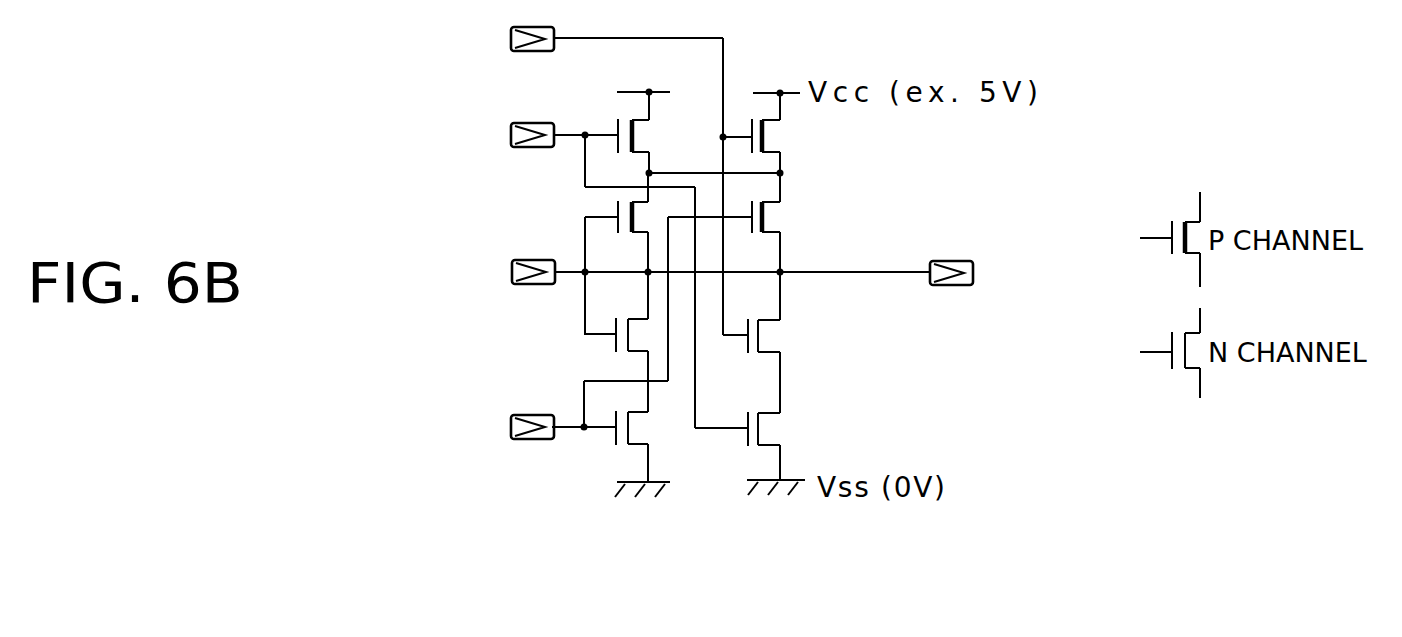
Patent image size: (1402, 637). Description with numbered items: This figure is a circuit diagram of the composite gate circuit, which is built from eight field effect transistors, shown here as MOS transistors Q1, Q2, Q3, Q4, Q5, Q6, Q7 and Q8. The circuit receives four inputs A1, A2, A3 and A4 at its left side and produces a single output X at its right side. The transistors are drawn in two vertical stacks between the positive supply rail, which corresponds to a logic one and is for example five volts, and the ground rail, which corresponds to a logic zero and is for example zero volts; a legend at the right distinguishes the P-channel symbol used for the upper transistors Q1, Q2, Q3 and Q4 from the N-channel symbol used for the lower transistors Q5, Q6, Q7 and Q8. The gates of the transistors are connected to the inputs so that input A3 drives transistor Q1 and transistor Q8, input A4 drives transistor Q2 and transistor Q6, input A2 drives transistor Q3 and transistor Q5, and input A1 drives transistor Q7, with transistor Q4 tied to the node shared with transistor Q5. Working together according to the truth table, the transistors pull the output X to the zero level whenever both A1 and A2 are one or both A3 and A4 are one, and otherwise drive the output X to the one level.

The MOS transistor Q1 is at (656, 132).
The MOS transistor Q2 is at (790, 133).
The MOS transistor Q3 is at (593, 222).
The MOS transistor Q4 is at (791, 222).
The MOS transistor Q5 is at (590, 342).
The MOS transistor Q6 is at (788, 342).
The MOS transistor Q7 is at (618, 454).
The MOS transistor Q8 is at (784, 453).
The input A1 is at (508, 427).
The input A2 is at (506, 273).
The input A3 is at (507, 137).
The input A4 is at (507, 40).
The output X is at (965, 273).